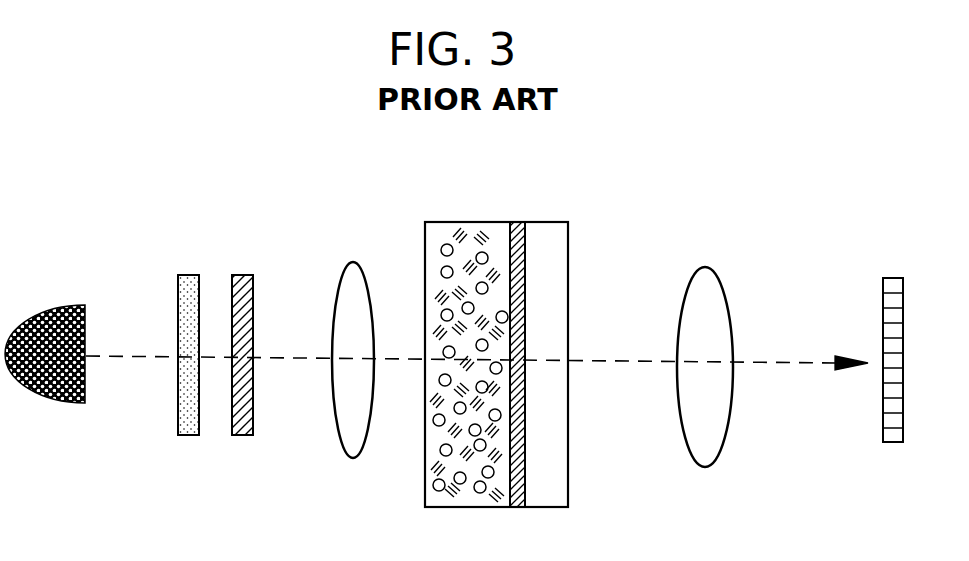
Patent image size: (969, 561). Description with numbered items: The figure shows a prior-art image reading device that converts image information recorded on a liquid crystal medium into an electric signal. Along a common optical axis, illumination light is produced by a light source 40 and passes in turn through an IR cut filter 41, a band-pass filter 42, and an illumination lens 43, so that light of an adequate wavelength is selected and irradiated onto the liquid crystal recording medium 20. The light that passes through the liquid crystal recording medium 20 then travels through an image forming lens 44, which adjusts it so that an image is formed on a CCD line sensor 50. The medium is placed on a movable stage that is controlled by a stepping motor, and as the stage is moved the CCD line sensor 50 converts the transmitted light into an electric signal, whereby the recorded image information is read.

The liquid crystal recording medium 20 is at (479, 200).
The light source 40 is at (49, 329).
The IR cut filter 41 is at (185, 326).
The band-pass filter 42 is at (240, 326).
The illumination lens 43 is at (358, 335).
The image forming lens 44 is at (705, 340).
The CCD line sensor 50 is at (895, 335).